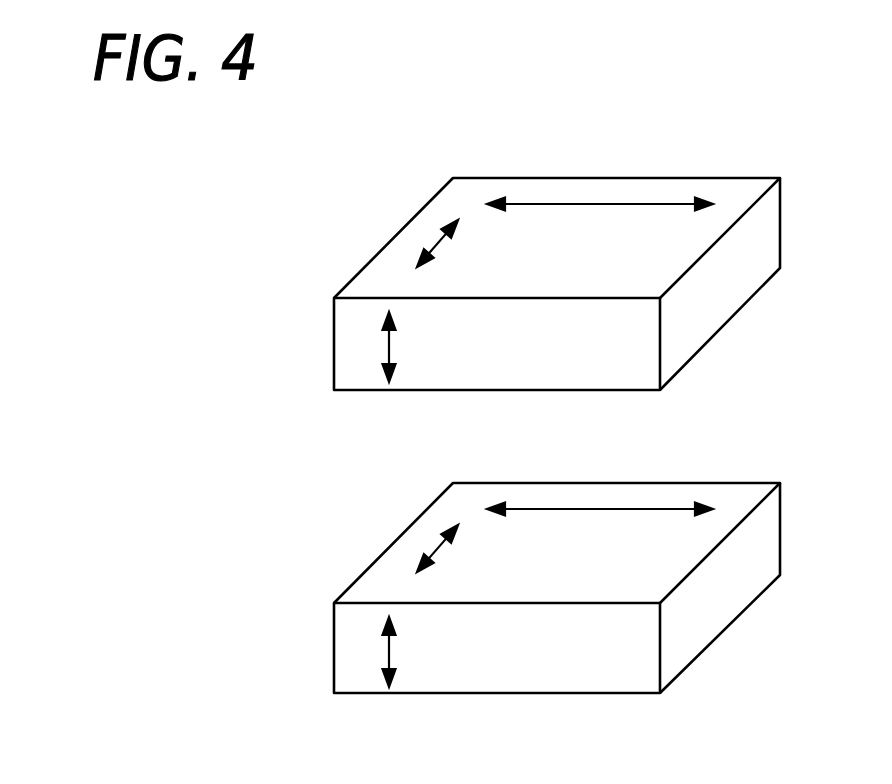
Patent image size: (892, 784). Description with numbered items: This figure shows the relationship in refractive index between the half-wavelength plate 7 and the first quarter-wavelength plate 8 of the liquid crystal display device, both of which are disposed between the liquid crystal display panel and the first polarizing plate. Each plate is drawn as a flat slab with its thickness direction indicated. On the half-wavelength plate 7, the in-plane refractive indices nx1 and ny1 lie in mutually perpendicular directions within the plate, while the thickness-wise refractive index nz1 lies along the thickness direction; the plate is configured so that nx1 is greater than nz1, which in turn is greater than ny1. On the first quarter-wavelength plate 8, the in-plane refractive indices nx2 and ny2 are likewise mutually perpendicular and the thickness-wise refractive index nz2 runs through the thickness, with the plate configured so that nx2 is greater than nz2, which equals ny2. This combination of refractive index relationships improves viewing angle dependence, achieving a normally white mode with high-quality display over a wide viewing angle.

The half-wavelength plate 7 is at (436, 284).
The first quarter-wavelength plate 8 is at (436, 588).
The in-plane refractive index of the half-wavelength plate nx1 is at (600, 223).
The in-plane refractive index of the half-wavelength plate ny1 is at (469, 244).
The thickness-wise refractive index of the half-wavelength plate nz1 is at (433, 347).
The in-plane refractive index of the first quarter-wavelength plate nx2 is at (600, 527).
The in-plane refractive index of the first quarter-wavelength plate ny2 is at (467, 549).
The thickness-wise refractive index of the first quarter-wavelength plate nz2 is at (432, 652).